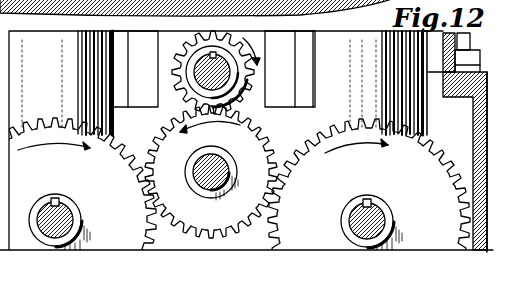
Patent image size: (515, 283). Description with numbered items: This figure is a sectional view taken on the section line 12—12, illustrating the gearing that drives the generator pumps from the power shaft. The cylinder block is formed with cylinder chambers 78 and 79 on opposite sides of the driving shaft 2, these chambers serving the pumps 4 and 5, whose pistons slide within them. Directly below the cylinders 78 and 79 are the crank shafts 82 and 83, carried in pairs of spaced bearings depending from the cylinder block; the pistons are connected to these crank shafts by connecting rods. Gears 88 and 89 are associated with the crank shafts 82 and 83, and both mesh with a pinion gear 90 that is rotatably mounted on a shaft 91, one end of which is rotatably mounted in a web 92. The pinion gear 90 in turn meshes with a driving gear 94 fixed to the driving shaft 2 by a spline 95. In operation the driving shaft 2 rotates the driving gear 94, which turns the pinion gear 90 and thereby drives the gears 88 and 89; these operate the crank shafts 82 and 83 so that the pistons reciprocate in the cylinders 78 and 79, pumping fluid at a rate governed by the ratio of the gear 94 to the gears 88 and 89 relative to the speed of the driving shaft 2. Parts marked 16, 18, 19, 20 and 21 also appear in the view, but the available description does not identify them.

The driving shaft 2 is at (200, 66).
The pump 4 is at (112, 80).
The pump 5 is at (313, 78).
The section line 12 is at (113, 13).
The bracket 16 is at (486, 69).
The side wall 18 is at (483, 226).
The bolt 19 is at (469, 52).
The nut 20 is at (482, 68).
The flange 21 is at (462, 98).
The cylinder chamber 78 is at (107, 113).
The cylinder chamber 79 is at (303, 108).
The crank shaft 82 is at (62, 217).
The crank shaft 83 is at (355, 221).
The gear 88 is at (117, 130).
The gear 89 is at (369, 201).
The pinion gear 90 is at (184, 228).
The shaft 91 is at (228, 170).
The web 92 is at (257, 103).
The driving gear 94 is at (247, 78).
The spline 95 is at (213, 52).